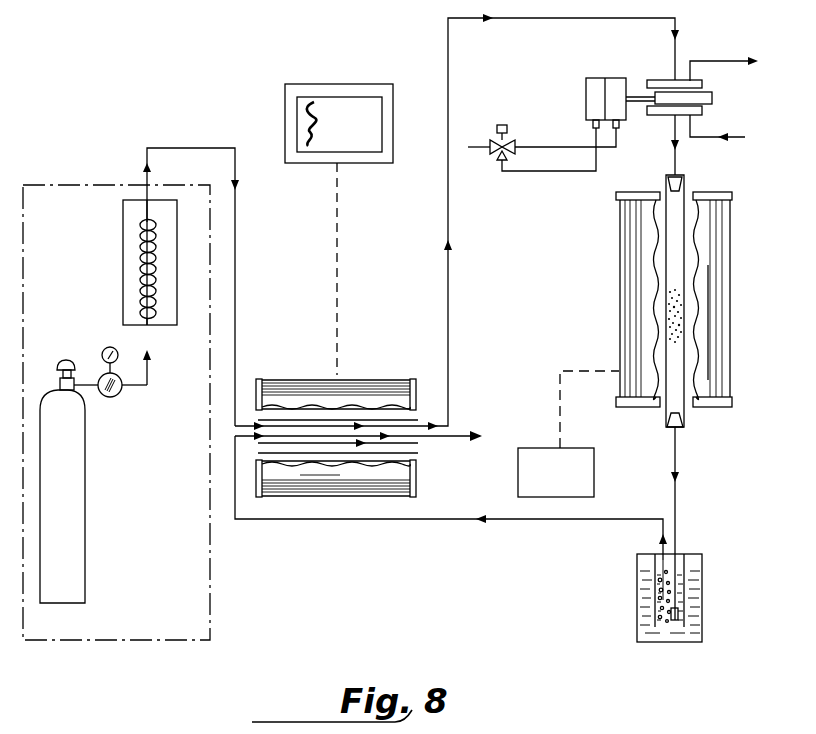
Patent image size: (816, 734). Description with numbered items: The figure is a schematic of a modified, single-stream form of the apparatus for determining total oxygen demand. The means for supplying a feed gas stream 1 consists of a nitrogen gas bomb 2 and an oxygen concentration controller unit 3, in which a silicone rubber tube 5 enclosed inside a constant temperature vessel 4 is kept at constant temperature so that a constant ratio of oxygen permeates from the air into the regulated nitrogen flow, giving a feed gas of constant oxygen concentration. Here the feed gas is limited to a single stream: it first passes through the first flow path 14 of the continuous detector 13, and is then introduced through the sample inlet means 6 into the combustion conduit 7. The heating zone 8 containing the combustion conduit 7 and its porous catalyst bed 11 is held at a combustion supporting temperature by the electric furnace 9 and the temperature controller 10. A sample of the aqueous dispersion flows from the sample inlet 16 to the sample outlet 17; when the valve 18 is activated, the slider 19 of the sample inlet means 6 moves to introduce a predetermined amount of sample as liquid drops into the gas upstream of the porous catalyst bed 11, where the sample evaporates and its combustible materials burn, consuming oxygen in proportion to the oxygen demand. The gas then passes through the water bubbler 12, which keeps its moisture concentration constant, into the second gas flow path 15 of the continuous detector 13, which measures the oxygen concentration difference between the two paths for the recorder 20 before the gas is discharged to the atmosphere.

The means for supplying a feed gas stream 1 is at (210, 575).
The nitrogen gas bomb 2 is at (75, 503).
The oxygen concentration controller unit 3 is at (119, 265).
The constant temperature vessel 4 is at (133, 217).
The silicone rubber tube 5 is at (141, 284).
The sample inlet means 6 is at (612, 85).
The combustion conduit 7 is at (688, 200).
The heating zone 8 is at (736, 299).
The electric furnace 9 is at (637, 240).
The temperature controller 10 is at (577, 478).
The porous catalyst bed 11 is at (668, 318).
The water bubbler 12 is at (637, 585).
The continuous detector for determining the difference in concentration of oxygen 13 is at (317, 376).
The first flow path 14 is at (378, 425).
The second gas flow path 15 is at (280, 435).
The sample inlet 16 is at (745, 137).
The sample outlet 17 is at (725, 61).
The valve 18 is at (505, 140).
The slider 19 is at (713, 95).
The recorder 20 is at (348, 90).